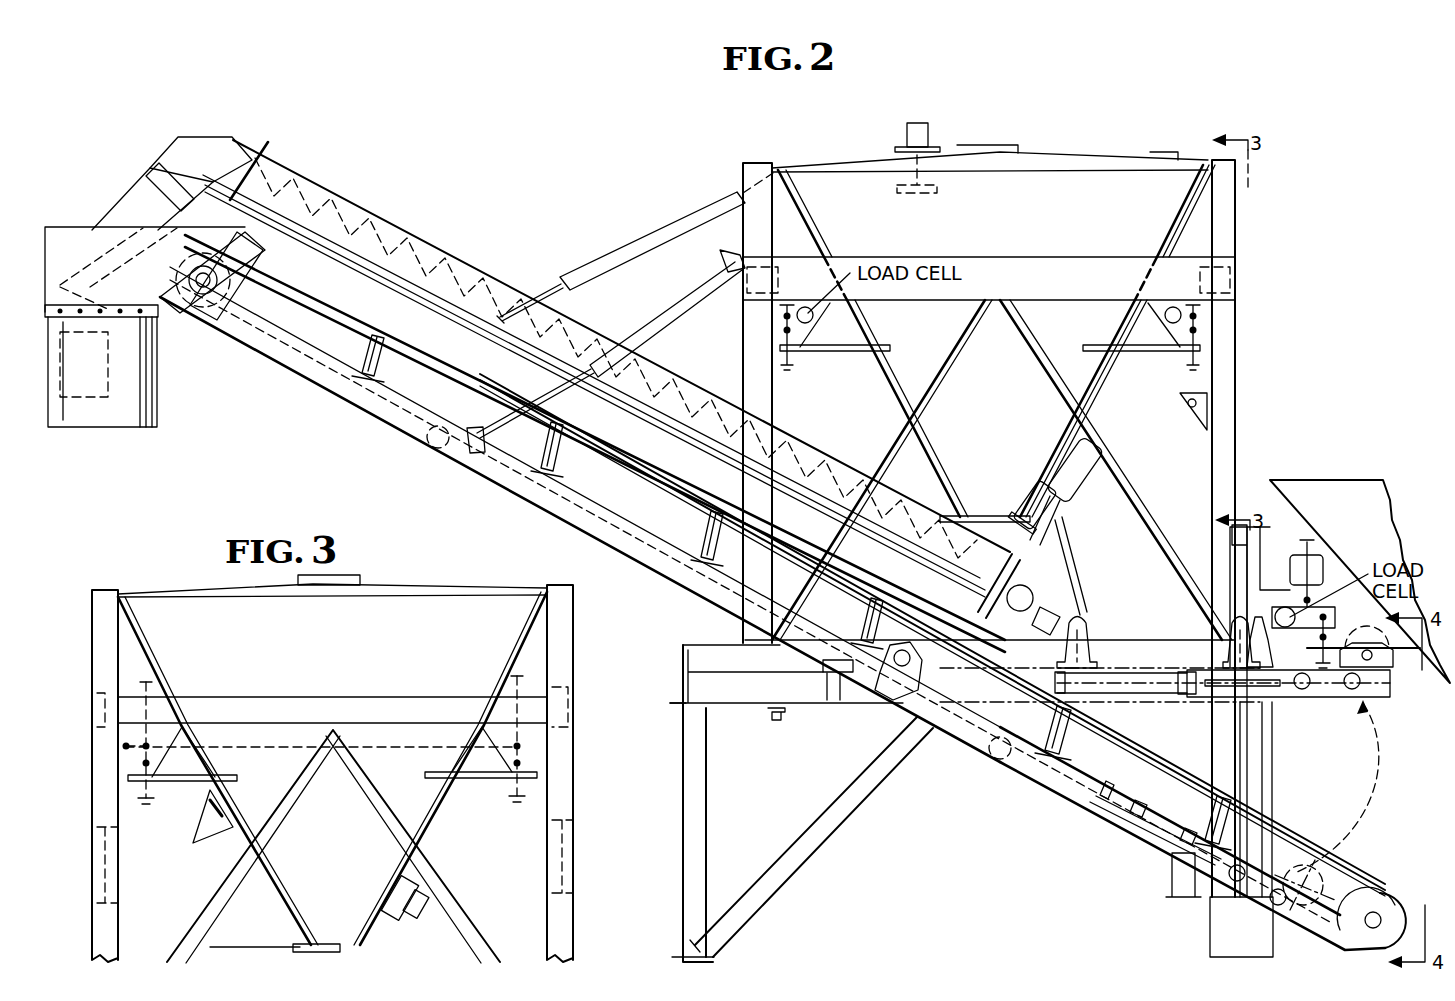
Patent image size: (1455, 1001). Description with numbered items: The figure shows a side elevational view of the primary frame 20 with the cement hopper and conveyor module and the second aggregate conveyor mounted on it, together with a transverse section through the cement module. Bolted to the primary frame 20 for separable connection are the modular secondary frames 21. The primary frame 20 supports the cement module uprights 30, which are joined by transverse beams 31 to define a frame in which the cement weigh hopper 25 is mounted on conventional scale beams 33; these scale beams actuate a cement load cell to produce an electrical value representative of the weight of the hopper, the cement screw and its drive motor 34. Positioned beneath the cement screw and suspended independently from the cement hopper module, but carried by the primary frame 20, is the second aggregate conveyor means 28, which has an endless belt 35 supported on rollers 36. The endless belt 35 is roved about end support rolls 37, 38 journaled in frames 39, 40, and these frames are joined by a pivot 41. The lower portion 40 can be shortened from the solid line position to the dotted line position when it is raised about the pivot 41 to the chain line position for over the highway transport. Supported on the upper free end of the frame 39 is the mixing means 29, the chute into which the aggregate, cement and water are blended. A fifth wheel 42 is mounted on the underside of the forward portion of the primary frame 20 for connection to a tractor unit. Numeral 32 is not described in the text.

In FIG. 2, the primary frame 20 is at (680, 634).
In FIG. 2, the modular secondary frame 21 is at (1252, 775).
In FIG. 2, the cement weigh hopper 25 is at (999, 374).
In FIG. 2, the second aggregate conveyor means 28 is at (455, 360).
In FIG. 2, the mixing means 29 is at (155, 318).
In FIG. 2, the cement module frame 30 is at (1236, 370).
In FIG. 3, the cement module frame 30 is at (100, 645).
In FIG. 3, the transverse beam 31 is at (330, 722).
In FIG. 2, the hopper support post 32 is at (772, 395).
In FIG. 2, the scale beam 33 is at (783, 345).
In FIG. 2, the drive motor 34 is at (1086, 458).
In FIG. 2, the endless belt 35 is at (602, 443).
In FIG. 2, the roller 36 is at (556, 450).
In FIG. 2, the end support roll 37 is at (222, 296).
In FIG. 2, the end support roll 38 is at (1388, 908).
In FIG. 2, the frame 39 is at (488, 470).
In FIG. 2, the frame 40 is at (1047, 778).
In FIG. 2, the pivot 41 is at (910, 652).
In FIG. 2, the fifth wheel 42 is at (770, 718).